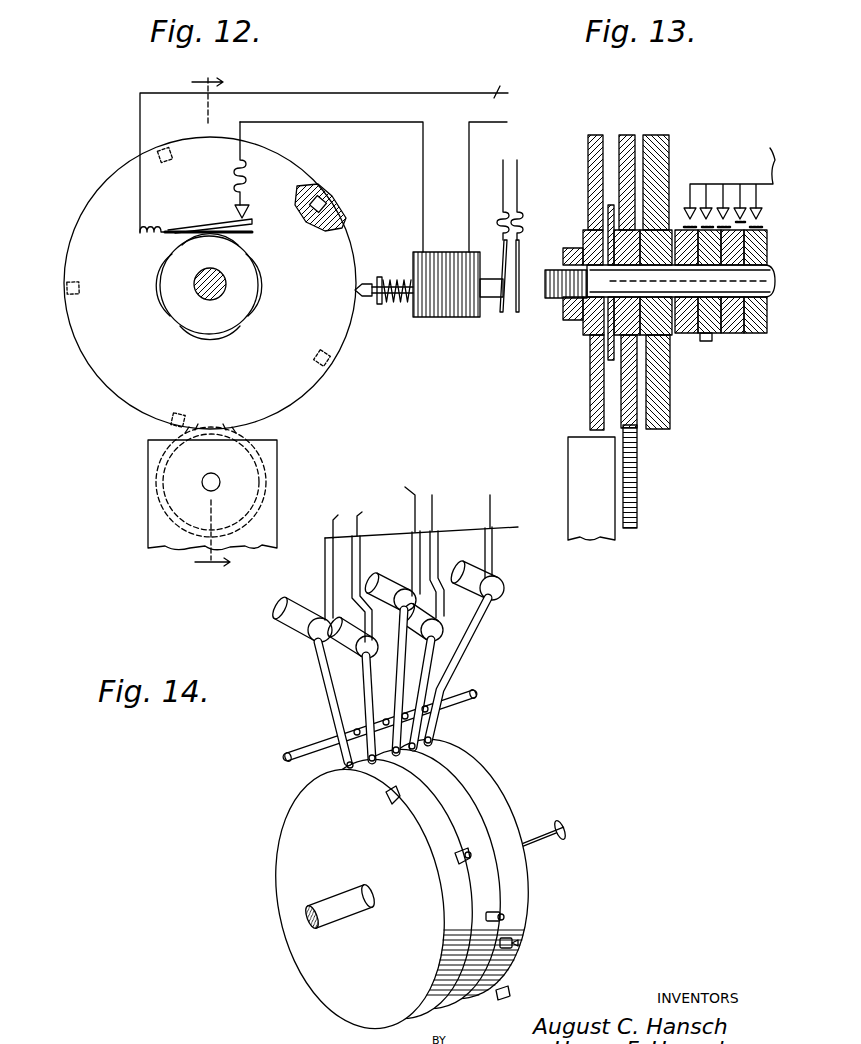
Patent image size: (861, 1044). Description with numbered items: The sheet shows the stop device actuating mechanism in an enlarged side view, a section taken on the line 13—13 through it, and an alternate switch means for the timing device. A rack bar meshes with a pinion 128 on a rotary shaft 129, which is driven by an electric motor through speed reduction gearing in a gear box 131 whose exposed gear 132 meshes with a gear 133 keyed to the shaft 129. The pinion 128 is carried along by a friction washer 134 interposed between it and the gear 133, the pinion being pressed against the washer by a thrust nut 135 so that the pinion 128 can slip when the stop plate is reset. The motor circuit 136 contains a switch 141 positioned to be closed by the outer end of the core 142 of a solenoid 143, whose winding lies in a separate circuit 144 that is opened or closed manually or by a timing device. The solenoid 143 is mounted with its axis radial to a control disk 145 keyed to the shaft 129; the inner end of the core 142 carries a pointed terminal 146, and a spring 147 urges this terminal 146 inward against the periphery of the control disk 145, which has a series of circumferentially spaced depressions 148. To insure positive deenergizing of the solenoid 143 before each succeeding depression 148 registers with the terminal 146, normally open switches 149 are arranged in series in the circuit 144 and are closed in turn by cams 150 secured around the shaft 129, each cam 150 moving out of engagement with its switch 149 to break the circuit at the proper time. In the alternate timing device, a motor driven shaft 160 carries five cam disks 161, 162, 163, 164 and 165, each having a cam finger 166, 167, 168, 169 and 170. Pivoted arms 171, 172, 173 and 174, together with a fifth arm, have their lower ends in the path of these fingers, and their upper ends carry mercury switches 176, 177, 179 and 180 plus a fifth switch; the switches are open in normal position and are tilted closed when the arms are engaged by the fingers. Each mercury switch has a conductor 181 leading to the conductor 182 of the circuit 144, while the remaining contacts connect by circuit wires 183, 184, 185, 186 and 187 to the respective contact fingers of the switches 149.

In FIG. 12, the section line 13 is at (211, 323).
In FIG. 13, the pinion 128 is at (590, 372).
In FIG. 12, the rotary shaft 129 is at (212, 300).
In FIG. 13, the rotary shaft 129 is at (681, 281).
In FIG. 12, the gear box 131 is at (264, 520).
In FIG. 13, the gear box 131 is at (575, 483).
In FIG. 12, the exposed gear 132 is at (232, 460).
In FIG. 13, the exposed gear 132 is at (637, 462).
In FIG. 13, the gear 133 is at (628, 385).
In FIG. 13, the friction washer 134 is at (608, 215).
In FIG. 13, the thrust nut 135 is at (566, 320).
In FIG. 12, the electric circuit 136 is at (515, 178).
In FIG. 12, the switch 141 is at (520, 263).
In FIG. 12, the core 142 is at (494, 292).
In FIG. 12, the solenoid 143 is at (450, 308).
In FIG. 12, the circuit 144 is at (506, 66).
In FIG. 13, the circuit 144 is at (734, 181).
In FIG. 13, the control disk 145 is at (668, 404).
In FIG. 12, the pointed terminal 146 is at (355, 290).
In FIG. 12, the spring 147 is at (403, 306).
In FIG. 12, the depressions 148 is at (320, 195).
In FIG. 12, the switches 149 is at (232, 215).
In FIG. 13, the switches 149 is at (700, 225).
In FIG. 12, the cams 150 is at (260, 272).
In FIG. 13, the cams 150 is at (738, 225).
In FIG. 14, the motor driven shaft 160 is at (550, 825).
In FIG. 14, the cam disk 161 is at (290, 915).
In FIG. 14, the cam disk 162 is at (432, 822).
In FIG. 14, the cam disk 163 is at (430, 788).
In FIG. 14, the cam disk 164 is at (462, 802).
In FIG. 14, the cam disk 165 is at (492, 810).
In FIG. 14, the cam finger 166 is at (388, 800).
In FIG. 14, the cam finger 167 is at (460, 860).
In FIG. 14, the cam finger 168 is at (503, 917).
In FIG. 14, the cam finger 169 is at (520, 944).
In FIG. 14, the cam finger 170 is at (515, 990).
In FIG. 14, the pivoted arm 171 is at (330, 680).
In FIG. 14, the pivoted arm 172 is at (360, 690).
In FIG. 14, the pivoted arm 173 is at (405, 678).
In FIG. 14, the pivoted arm 174 is at (440, 660).
In FIG. 14, the mercury switch 176 is at (280, 615).
In FIG. 14, the mercury switch 177 is at (355, 652).
In FIG. 14, the mercury switch 179 is at (445, 635).
In FIG. 14, the mercury switch 180 is at (503, 585).
In FIG. 12, the conductor 181 is at (246, 138).
In FIG. 14, the conductor 181 is at (333, 573).
In FIG. 12, the conductor 182 is at (386, 126).
In FIG. 14, the conductor 182 is at (518, 530).
In FIG. 12, the circuit wire 183 is at (360, 93).
In FIG. 14, the circuit wire 183 is at (340, 510).
In FIG. 14, the circuit wire 184 is at (365, 518).
In FIG. 14, the circuit wire 185 is at (418, 498).
In FIG. 14, the circuit wire 186 is at (433, 508).
In FIG. 14, the circuit wire 187 is at (492, 508).